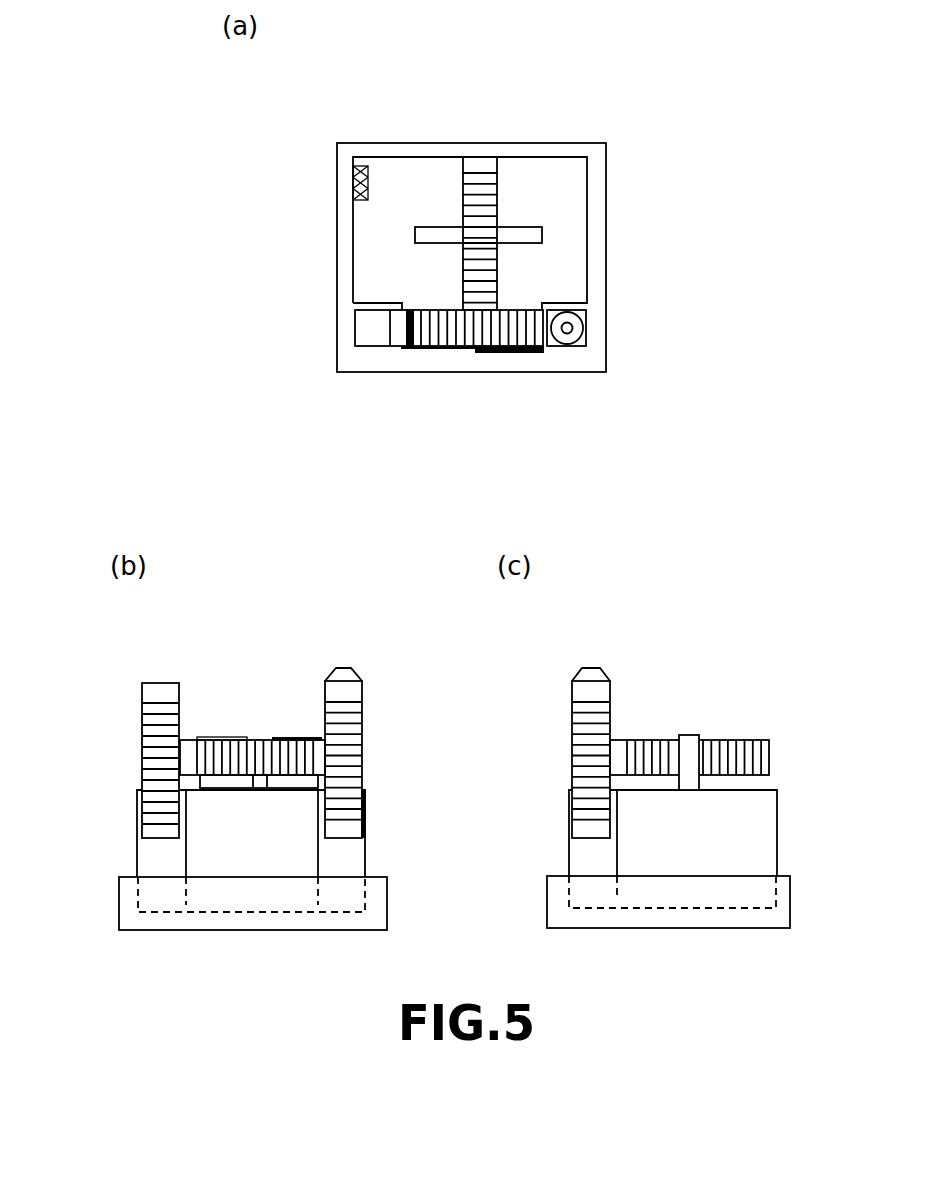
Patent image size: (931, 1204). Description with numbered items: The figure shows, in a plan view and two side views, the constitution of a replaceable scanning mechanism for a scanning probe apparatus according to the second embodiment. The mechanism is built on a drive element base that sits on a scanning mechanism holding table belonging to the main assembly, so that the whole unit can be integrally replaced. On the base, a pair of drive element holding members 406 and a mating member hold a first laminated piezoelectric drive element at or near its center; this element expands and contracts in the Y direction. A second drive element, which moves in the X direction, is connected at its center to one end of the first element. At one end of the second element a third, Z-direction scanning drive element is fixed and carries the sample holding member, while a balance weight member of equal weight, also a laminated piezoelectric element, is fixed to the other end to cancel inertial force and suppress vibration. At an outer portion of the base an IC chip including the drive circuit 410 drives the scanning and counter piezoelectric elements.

The drive element holding member 406 is at (440, 233).
The drive circuit 410 is at (372, 184).